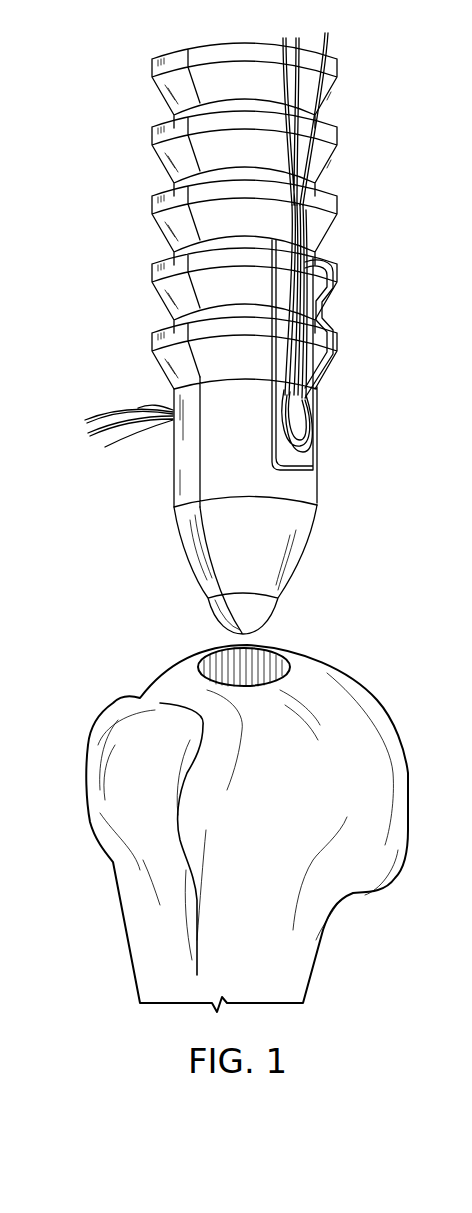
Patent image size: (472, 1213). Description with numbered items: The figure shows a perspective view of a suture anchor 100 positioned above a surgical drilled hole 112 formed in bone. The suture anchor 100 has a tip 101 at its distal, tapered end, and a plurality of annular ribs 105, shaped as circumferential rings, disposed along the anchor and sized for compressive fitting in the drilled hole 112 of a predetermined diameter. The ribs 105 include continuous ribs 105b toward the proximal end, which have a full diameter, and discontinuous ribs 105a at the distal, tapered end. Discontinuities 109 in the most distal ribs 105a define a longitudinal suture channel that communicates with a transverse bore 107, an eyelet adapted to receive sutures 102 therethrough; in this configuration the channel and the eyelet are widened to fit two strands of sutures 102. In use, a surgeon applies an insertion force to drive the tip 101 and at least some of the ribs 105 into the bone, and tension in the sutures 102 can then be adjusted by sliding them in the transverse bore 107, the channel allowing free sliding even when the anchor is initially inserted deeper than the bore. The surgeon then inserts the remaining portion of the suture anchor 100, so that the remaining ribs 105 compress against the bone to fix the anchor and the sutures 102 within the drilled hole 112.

The suture anchor 100 is at (86, 80).
The tip 101 is at (300, 552).
The sutures 102 is at (298, 126).
The ribs 105 is at (152, 214).
The discontinuous ribs 105a is at (151, 340).
The continuous ribs 105b is at (151, 139).
The transverse bore 107 is at (310, 447).
The discontinuities 109 is at (336, 292).
The drilled hole 112 is at (232, 656).